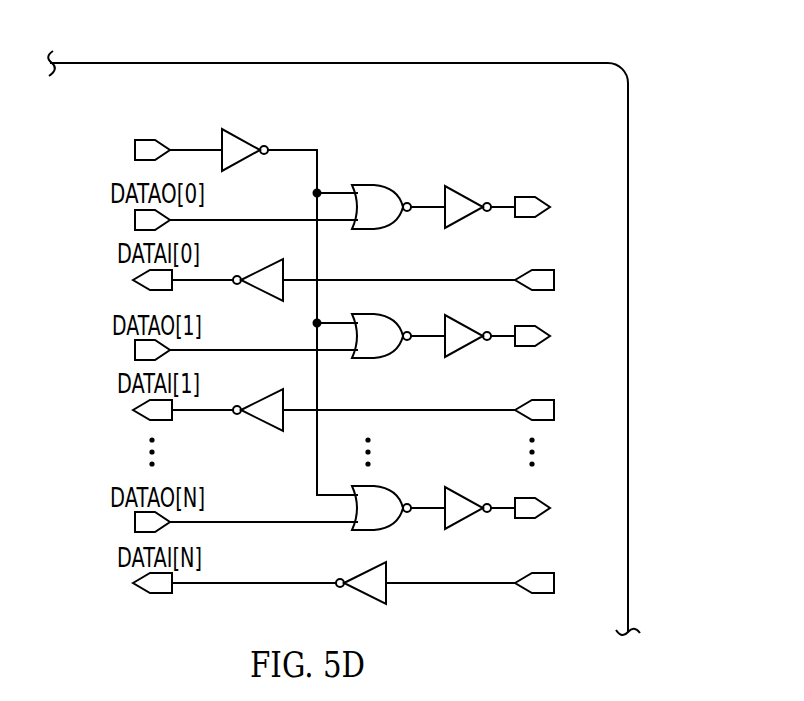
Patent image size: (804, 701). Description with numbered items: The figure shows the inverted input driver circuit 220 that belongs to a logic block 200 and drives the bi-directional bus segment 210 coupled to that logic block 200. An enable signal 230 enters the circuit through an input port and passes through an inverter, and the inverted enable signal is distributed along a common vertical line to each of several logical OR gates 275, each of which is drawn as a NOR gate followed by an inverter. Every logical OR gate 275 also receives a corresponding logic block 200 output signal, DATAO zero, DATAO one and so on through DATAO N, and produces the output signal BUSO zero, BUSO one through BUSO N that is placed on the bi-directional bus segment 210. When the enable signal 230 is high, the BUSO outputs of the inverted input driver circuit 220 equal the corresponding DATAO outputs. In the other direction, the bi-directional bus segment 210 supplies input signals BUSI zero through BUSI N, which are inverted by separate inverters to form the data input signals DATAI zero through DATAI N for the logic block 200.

The logic block 200 is at (541, 70).
The bi-directional bus segment 210 is at (577, 290).
The inverted input driver circuit 220 is at (362, 128).
The enable signal 230 is at (135, 150).
The logical OR gate 275 is at (472, 168).